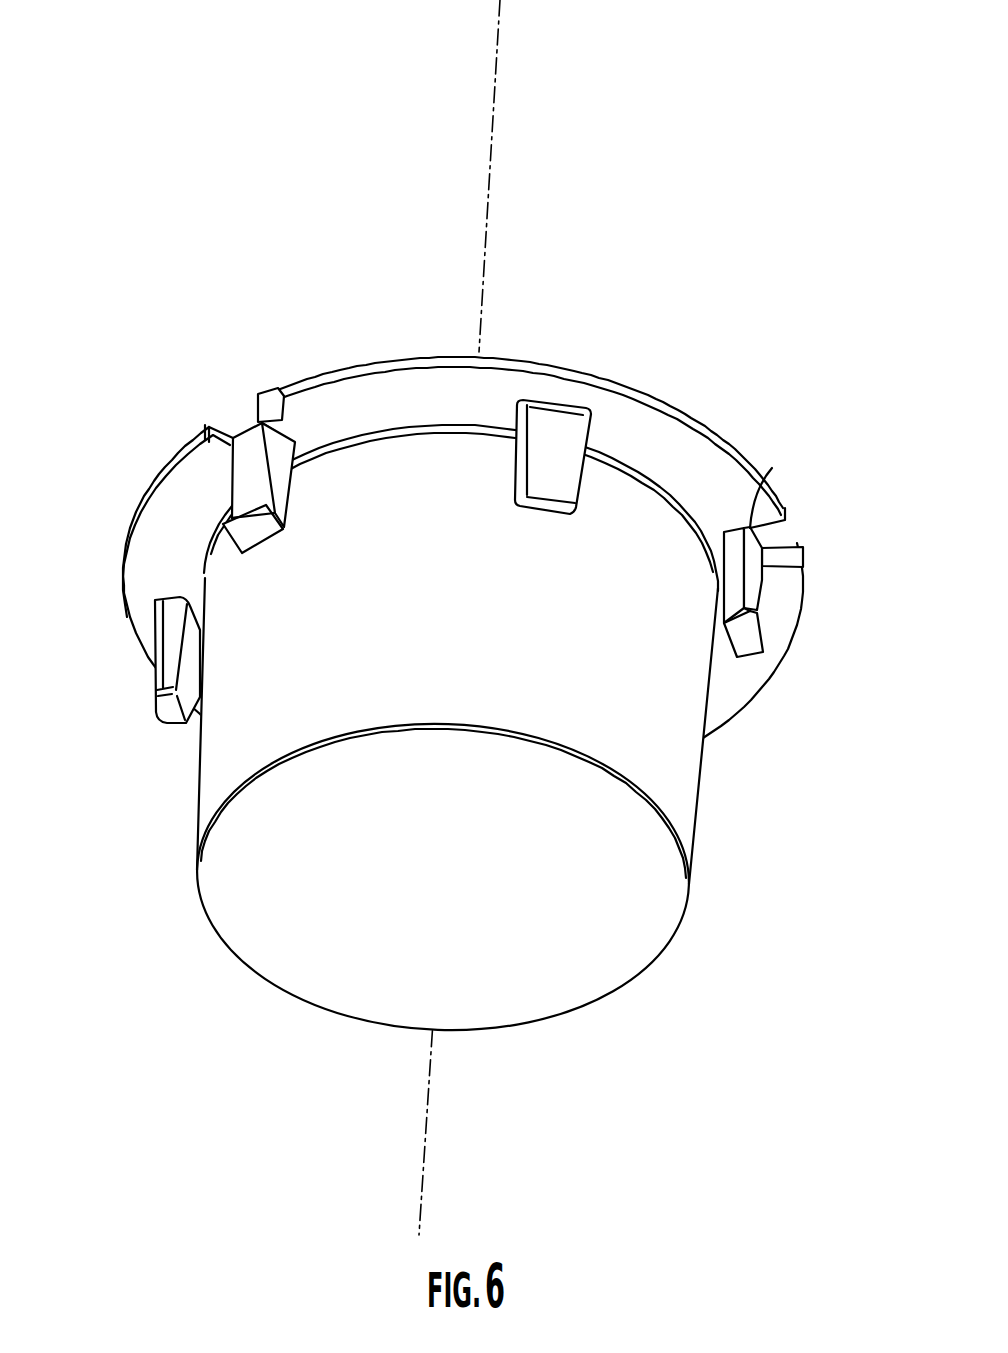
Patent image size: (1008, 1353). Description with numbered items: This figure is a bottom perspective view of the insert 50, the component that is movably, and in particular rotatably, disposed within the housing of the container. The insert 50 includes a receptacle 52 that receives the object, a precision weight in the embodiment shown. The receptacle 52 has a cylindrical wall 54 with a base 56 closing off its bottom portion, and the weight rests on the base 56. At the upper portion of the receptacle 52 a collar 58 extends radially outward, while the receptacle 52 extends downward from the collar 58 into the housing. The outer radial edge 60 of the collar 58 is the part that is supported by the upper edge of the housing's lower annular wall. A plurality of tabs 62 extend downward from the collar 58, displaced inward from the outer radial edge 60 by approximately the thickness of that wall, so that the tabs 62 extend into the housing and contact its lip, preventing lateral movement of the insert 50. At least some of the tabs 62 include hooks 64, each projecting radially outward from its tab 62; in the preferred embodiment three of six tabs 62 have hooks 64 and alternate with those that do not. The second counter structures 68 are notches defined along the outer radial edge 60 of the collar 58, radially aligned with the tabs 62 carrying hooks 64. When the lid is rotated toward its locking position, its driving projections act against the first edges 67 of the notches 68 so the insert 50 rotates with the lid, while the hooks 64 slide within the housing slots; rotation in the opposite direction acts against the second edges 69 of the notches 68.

The insert 50 is at (688, 782).
The receptacle 52 is at (232, 769).
The cylindrical wall 54 is at (237, 730).
The base 56 is at (325, 952).
The collar 58 is at (677, 427).
The outer radial edge 60 is at (650, 392).
The tabs 62 is at (471, 512).
The hooks 64 is at (758, 645).
The first edges 67 is at (757, 500).
The second counter structures 68 is at (782, 545).
The second edges 69 is at (792, 558).